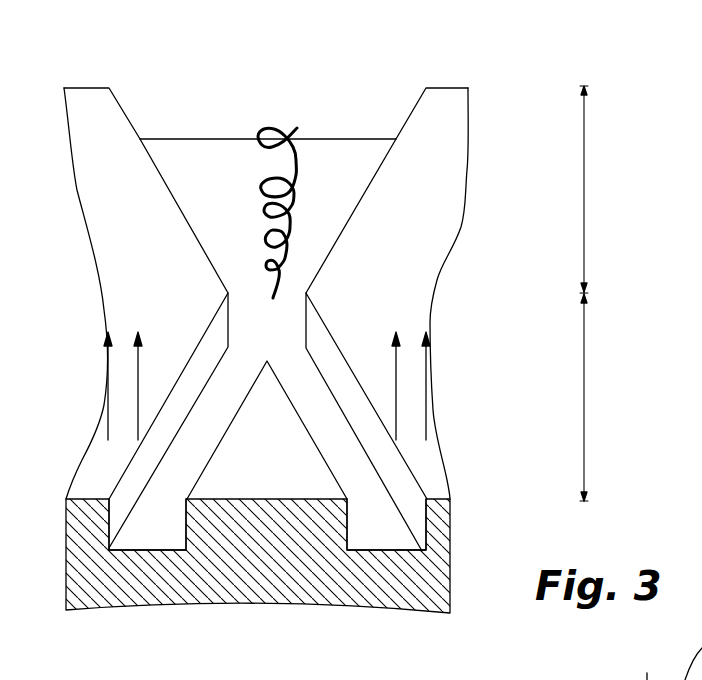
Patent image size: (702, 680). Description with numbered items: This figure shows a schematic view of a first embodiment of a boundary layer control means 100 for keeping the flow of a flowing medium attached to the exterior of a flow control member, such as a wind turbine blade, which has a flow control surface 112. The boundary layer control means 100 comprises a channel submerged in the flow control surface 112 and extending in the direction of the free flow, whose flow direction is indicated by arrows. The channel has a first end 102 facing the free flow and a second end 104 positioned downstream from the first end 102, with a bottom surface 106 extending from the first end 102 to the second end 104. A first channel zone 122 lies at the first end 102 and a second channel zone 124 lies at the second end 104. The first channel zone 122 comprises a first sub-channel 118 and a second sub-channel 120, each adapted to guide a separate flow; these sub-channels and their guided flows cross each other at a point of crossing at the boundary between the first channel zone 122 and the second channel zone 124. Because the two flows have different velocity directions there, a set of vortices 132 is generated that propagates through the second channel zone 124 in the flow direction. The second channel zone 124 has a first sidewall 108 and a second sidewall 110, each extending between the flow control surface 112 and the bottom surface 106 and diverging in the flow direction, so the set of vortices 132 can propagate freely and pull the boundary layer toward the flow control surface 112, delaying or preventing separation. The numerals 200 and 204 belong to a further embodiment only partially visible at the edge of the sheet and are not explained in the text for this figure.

The boundary layer control means 100 is at (269, 73).
The first end 102 is at (257, 488).
The second end 104 is at (304, 150).
The bottom surface 106 is at (338, 205).
The first sidewall 108 is at (189, 216).
The second sidewall 110 is at (340, 236).
The flow control surface 112 is at (407, 318).
The first sub-channel 118 is at (157, 538).
The second sub-channel 120 is at (378, 533).
The first channel zone 122 is at (563, 397).
The second channel zone 124 is at (564, 189).
The set of vortices 132 is at (256, 133).
The second device 200 is at (562, 676).
The second device element 204 is at (650, 664).